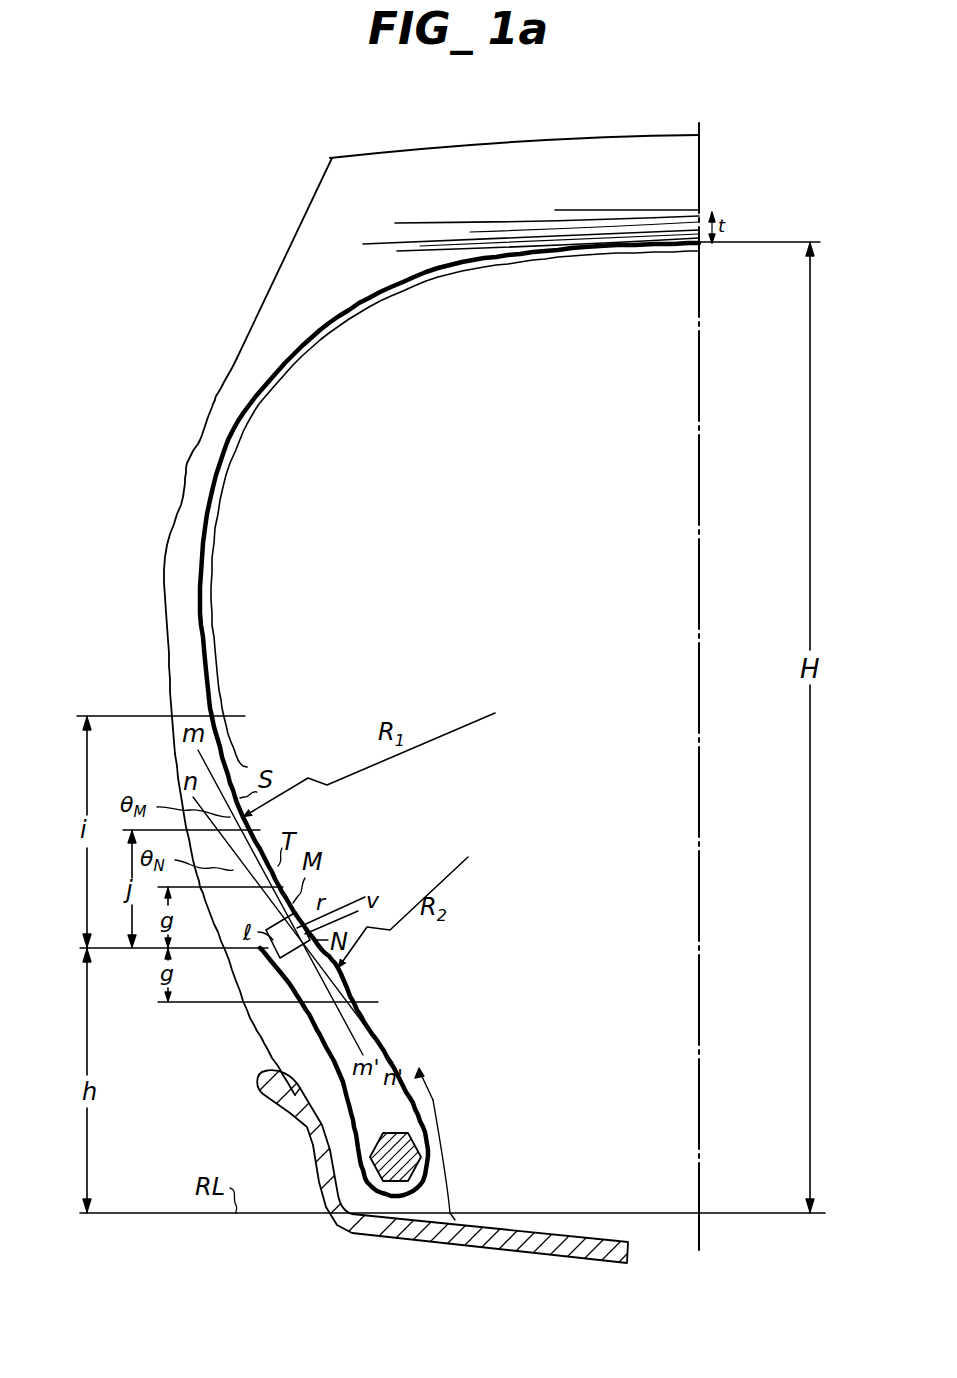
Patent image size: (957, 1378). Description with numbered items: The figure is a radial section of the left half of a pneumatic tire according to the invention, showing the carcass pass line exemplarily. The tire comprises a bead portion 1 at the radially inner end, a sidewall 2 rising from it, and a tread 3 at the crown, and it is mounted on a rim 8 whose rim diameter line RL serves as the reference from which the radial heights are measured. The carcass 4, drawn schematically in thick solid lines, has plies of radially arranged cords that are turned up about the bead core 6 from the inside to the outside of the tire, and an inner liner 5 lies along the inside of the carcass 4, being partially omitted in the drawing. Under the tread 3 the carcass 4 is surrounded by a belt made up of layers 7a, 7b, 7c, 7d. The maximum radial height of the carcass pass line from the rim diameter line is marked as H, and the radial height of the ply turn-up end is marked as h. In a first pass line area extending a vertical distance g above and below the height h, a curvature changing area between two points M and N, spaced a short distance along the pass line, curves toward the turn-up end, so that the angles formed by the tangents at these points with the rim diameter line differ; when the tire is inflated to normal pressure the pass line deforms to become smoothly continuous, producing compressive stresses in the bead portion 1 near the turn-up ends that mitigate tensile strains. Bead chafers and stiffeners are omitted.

The bead portion 1 is at (253, 1020).
The sidewall 2 is at (178, 583).
The tread 3 is at (542, 150).
The carcass 4 is at (272, 385).
The inner liner 5 is at (368, 306).
The bead core 6 is at (403, 1143).
The belt 7a is at (462, 255).
The belt 7b is at (372, 244).
The belt 7c is at (440, 222).
The belt 7d is at (605, 210).
The rim 8 is at (503, 1240).